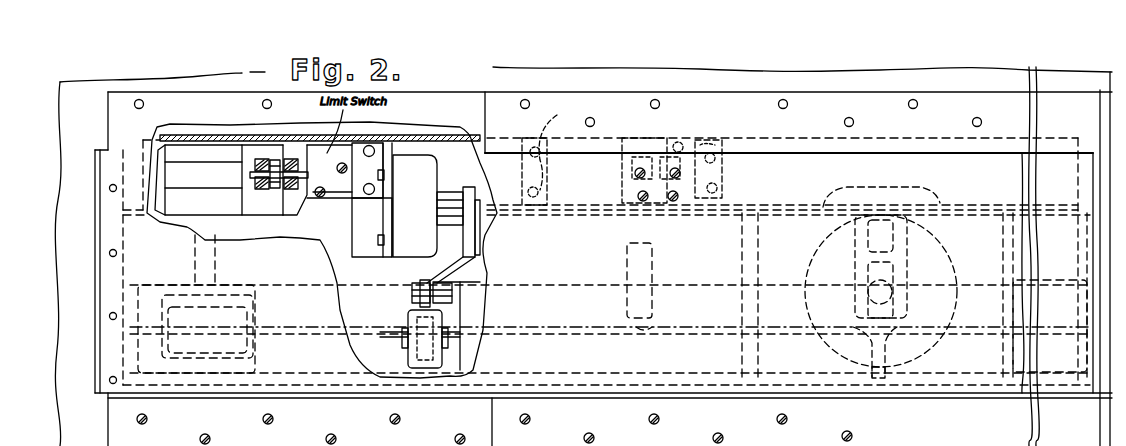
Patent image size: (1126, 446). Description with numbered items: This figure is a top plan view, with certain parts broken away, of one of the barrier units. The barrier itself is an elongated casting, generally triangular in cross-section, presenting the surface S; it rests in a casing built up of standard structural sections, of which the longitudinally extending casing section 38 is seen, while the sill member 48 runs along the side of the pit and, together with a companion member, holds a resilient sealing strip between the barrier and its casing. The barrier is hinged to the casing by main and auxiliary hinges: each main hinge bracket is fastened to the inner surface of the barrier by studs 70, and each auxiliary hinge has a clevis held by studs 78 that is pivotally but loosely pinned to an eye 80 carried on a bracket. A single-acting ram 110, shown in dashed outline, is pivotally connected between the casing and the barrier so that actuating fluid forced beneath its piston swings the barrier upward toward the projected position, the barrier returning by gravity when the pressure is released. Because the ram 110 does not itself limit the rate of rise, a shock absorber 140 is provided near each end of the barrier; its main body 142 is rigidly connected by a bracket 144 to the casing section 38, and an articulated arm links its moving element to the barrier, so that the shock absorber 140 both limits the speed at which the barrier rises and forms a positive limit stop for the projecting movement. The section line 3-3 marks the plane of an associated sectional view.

The section line 3- 3 is at (66, 358).
The rear casing section 38 is at (320, 238).
The sill member 48 is at (852, 109).
The studs 70 is at (549, 152).
The studs 78 is at (642, 170).
The eye 80 is at (675, 148).
The ram 110 is at (838, 248).
The shock absorber 140 is at (472, 245).
The main body 142 is at (440, 172).
The bracket 144 is at (368, 250).
The surface S is at (700, 314).